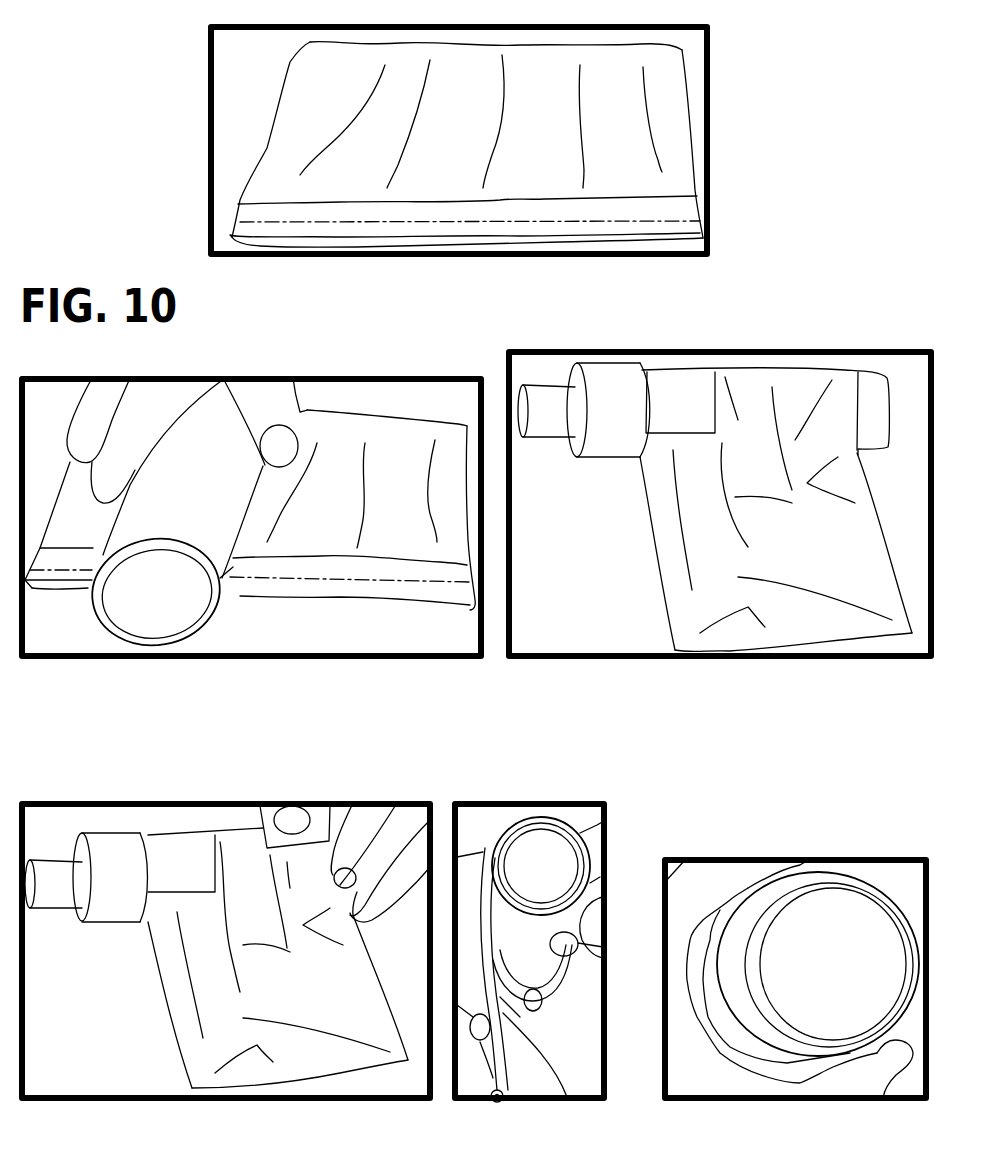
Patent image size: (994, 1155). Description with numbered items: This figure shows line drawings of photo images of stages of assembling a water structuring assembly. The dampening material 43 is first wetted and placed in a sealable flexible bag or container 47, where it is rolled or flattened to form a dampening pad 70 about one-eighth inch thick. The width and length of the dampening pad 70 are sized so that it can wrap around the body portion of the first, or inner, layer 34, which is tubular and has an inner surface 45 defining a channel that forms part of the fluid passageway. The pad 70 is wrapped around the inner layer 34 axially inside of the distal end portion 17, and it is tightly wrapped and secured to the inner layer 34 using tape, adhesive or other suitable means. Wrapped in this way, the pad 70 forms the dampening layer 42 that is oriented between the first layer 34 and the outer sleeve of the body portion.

The dampening pad 70 is at (510, 223).
The first layer 34 is at (225, 575).
The inner surface 45 is at (150, 615).
The dampening layer 42 is at (313, 588).
The dampening material 43 is at (400, 180).
The flexible bag or container 47 is at (695, 212).
The distal end portion 17 is at (612, 377).